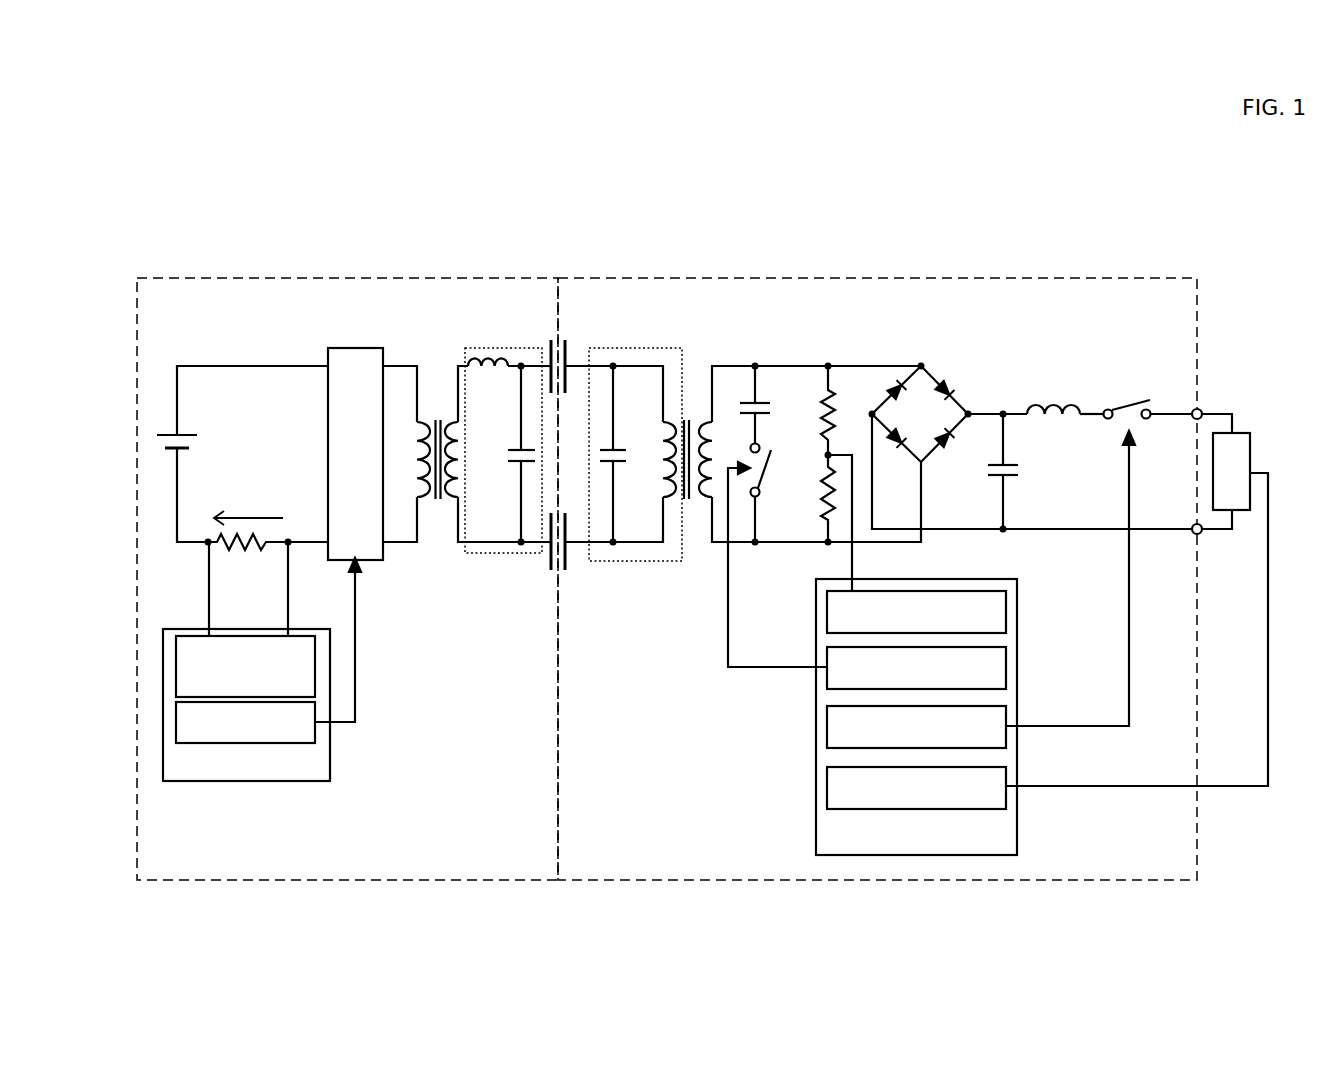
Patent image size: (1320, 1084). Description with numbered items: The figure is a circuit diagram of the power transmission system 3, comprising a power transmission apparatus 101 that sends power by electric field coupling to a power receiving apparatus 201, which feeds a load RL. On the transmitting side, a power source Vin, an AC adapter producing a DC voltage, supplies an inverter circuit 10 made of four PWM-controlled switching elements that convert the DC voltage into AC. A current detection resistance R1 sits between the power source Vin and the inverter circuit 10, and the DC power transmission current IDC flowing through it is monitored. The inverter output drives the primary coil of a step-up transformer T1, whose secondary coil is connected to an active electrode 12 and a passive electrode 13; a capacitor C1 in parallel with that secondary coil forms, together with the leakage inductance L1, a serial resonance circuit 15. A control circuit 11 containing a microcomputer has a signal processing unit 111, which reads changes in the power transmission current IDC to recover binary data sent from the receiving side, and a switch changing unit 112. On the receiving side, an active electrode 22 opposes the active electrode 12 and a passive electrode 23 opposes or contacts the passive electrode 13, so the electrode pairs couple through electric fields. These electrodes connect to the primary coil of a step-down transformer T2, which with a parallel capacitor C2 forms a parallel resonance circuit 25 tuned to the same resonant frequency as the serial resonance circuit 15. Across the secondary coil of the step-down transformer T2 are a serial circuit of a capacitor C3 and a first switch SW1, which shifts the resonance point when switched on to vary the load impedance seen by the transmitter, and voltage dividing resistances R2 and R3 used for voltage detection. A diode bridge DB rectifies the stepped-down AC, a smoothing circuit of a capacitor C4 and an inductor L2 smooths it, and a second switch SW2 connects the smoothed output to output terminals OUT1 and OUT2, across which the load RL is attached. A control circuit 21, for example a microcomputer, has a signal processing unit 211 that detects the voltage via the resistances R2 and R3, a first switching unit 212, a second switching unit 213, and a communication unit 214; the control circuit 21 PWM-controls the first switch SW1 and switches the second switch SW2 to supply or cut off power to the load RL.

The power transmission system 3 is at (668, 523).
The power transmission apparatus 101 is at (138, 270).
The power receiving apparatus 201 is at (1197, 278).
The inverter circuit 10 is at (333, 346).
The control circuit 11 is at (225, 721).
The signal processing unit 111 is at (176, 667).
The switch changing unit 112 is at (176, 719).
The active electrode 12 is at (549, 340).
The passive electrode 13 is at (549, 561).
The serial resonance circuit 15 is at (489, 471).
The active electrode 22 is at (567, 340).
The passive electrode 23 is at (567, 561).
The parallel resonance circuit 25 is at (651, 476).
The control circuit 21 is at (907, 698).
The signal processing unit 211 is at (827, 613).
The first switching unit 212 is at (827, 662).
The second switching unit 213 is at (827, 725).
The communication unit 214 is at (827, 785).
The power source Vin is at (184, 431).
The power transmission current IDC is at (248, 511).
The current detection resistance R1 is at (248, 555).
The step-up transformer T1 is at (443, 362).
The leakage inductance L1 is at (488, 375).
The capacitor C1 is at (509, 454).
The capacitor C2 is at (622, 454).
The step-down transformer T2 is at (692, 364).
The capacitor C3 is at (762, 404).
The first switch SW1 is at (772, 482).
The voltage dividing resistance R2 is at (815, 410).
The voltage dividing resistance R3 is at (814, 498).
The diode bridge DB is at (938, 363).
The capacitor C4 is at (1016, 471).
The inductor L2 is at (1053, 395).
The second switch SW2 is at (1132, 393).
The output terminal OUT1 is at (1203, 402).
The output terminal OUT2 is at (1203, 542).
The load RL is at (1240, 431).